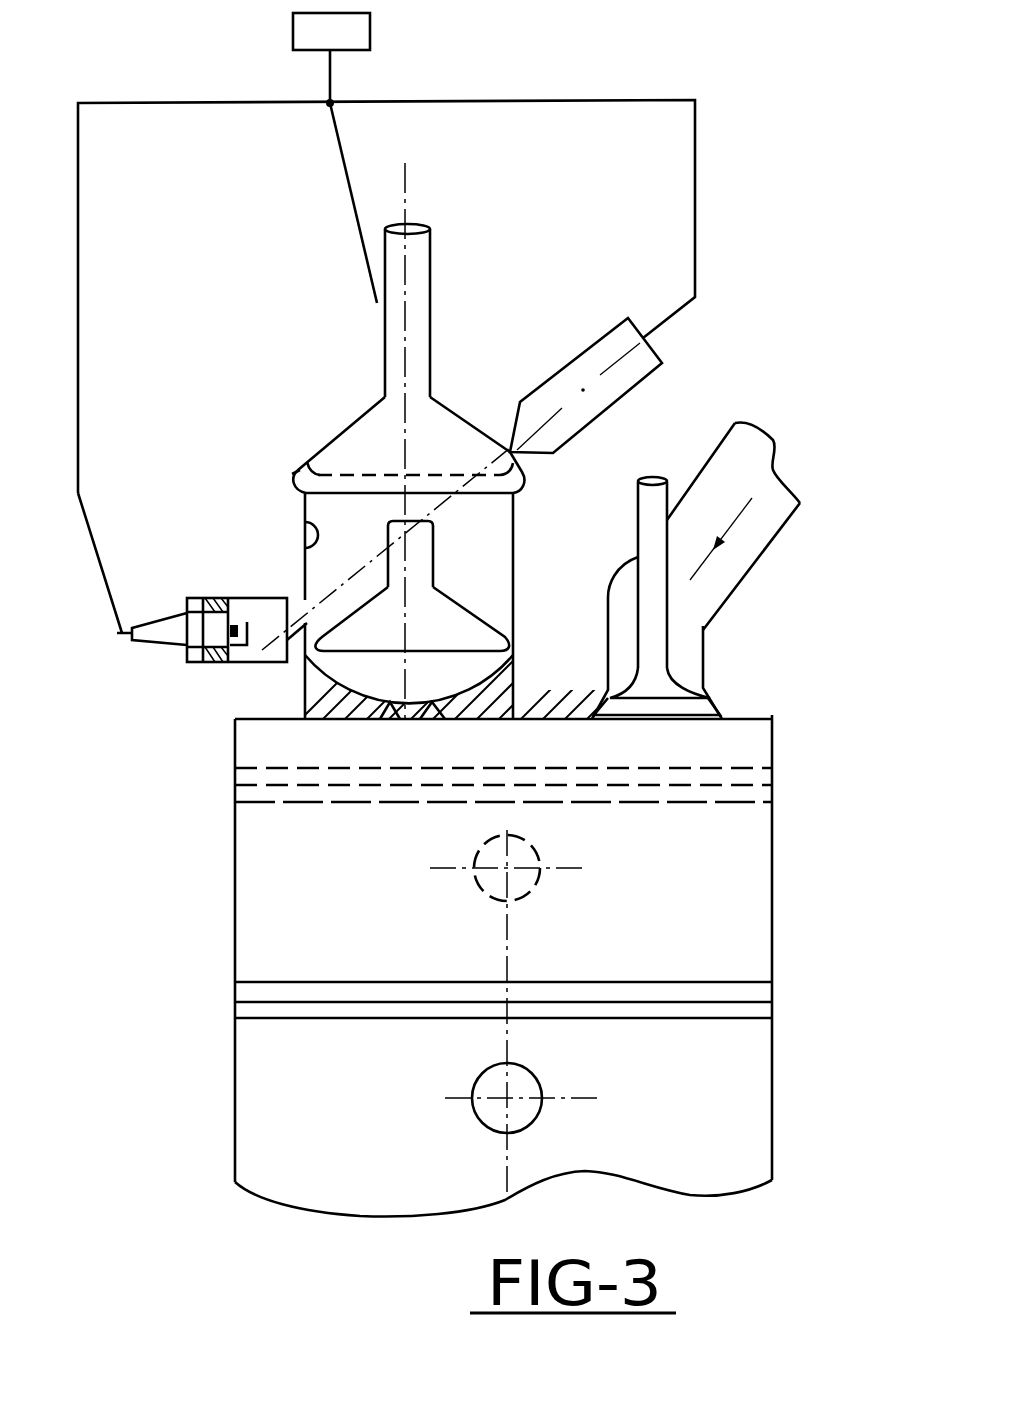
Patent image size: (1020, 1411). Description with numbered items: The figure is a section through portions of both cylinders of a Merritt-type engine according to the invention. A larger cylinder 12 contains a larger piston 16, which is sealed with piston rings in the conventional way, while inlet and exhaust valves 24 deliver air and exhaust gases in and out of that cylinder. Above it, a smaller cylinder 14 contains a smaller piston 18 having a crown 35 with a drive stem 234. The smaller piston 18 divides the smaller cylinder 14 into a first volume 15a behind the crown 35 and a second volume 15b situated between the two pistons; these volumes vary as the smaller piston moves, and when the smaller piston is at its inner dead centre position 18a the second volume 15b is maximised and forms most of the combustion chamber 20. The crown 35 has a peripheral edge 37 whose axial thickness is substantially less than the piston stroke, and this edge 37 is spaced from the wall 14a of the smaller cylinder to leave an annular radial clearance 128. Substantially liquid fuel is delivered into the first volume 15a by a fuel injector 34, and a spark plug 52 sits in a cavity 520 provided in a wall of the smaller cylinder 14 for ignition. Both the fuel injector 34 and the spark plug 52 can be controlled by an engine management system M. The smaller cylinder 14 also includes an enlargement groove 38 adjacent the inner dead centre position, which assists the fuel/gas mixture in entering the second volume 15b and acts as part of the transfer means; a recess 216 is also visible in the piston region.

The engine management system M is at (359, 151).
The larger cylinder 12 is at (733, 727).
The smaller cylinder 14 is at (513, 515).
The wall of the smaller cylinder 14a is at (305, 547).
The first volume 15a is at (485, 575).
The second volume 15b is at (463, 665).
The larger piston 16 is at (255, 845).
The smaller piston 18 is at (424, 613).
The inner dead centre position 18a is at (422, 434).
The combustion chamber 20 is at (333, 721).
The inlet and exhaust valves 24 is at (652, 615).
The fuel injector 34 is at (648, 360).
The crown 35 is at (473, 652).
The edge of the crown 37 is at (307, 572).
The enlargement groove 38 is at (292, 474).
The spark plug 52 is at (152, 637).
The radial clearance 128 is at (512, 645).
The piston recess 216 is at (367, 705).
The drive stem 234 is at (413, 266).
The cavity 520 is at (257, 650).